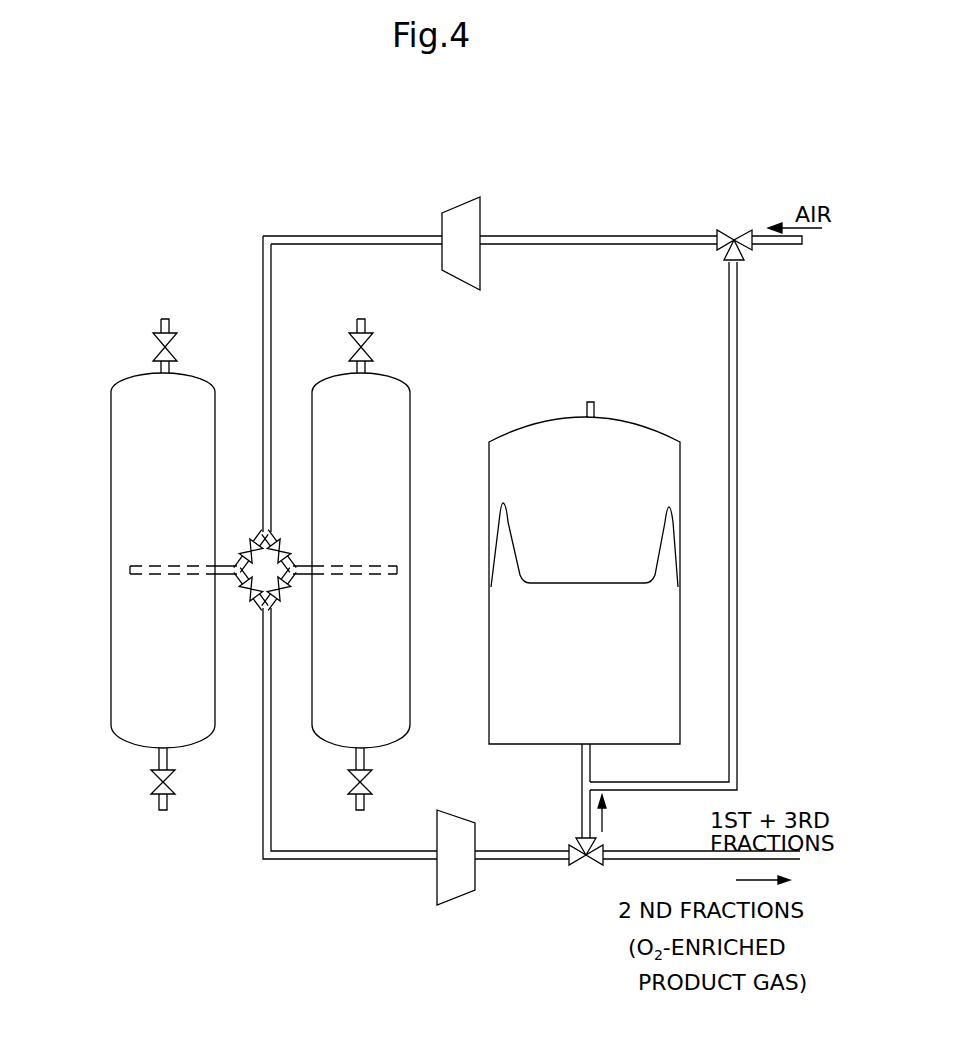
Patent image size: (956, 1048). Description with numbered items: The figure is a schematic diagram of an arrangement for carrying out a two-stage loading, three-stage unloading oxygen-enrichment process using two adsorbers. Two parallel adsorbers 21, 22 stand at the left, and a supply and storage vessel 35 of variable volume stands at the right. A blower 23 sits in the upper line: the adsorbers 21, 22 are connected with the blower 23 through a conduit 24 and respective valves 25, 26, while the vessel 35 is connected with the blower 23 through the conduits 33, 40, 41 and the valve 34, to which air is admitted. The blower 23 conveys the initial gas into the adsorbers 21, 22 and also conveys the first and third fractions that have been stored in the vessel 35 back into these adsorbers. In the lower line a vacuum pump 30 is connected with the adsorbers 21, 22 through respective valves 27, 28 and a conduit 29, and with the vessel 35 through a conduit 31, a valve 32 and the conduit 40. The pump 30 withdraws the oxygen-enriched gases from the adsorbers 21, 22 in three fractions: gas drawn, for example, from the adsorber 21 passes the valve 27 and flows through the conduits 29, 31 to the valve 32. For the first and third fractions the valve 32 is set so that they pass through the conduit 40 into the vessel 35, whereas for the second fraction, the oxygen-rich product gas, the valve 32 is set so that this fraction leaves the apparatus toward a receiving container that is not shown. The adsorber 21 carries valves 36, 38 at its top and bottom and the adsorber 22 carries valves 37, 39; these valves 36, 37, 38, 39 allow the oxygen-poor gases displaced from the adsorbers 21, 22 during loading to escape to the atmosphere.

The adsorber 21 is at (111, 491).
The adsorber 22 is at (410, 513).
The blower 23 is at (476, 197).
The conduit 24 is at (380, 236).
The valve 25 is at (253, 538).
The valve 26 is at (278, 538).
The valve 27 is at (251, 600).
The valve 28 is at (279, 600).
The conduit 29 is at (375, 860).
The vacuum pump 30 is at (468, 899).
The conduit 31 is at (508, 862).
The valve 32 is at (564, 870).
The conduit 33 is at (738, 606).
The valve 34 is at (718, 232).
The supply and storage vessel 35 is at (660, 430).
The valve 36 is at (158, 338).
The valve 37 is at (354, 338).
The valve 38 is at (157, 792).
The valve 39 is at (354, 792).
The conduit 40 is at (581, 819).
The conduit 41 is at (594, 236).